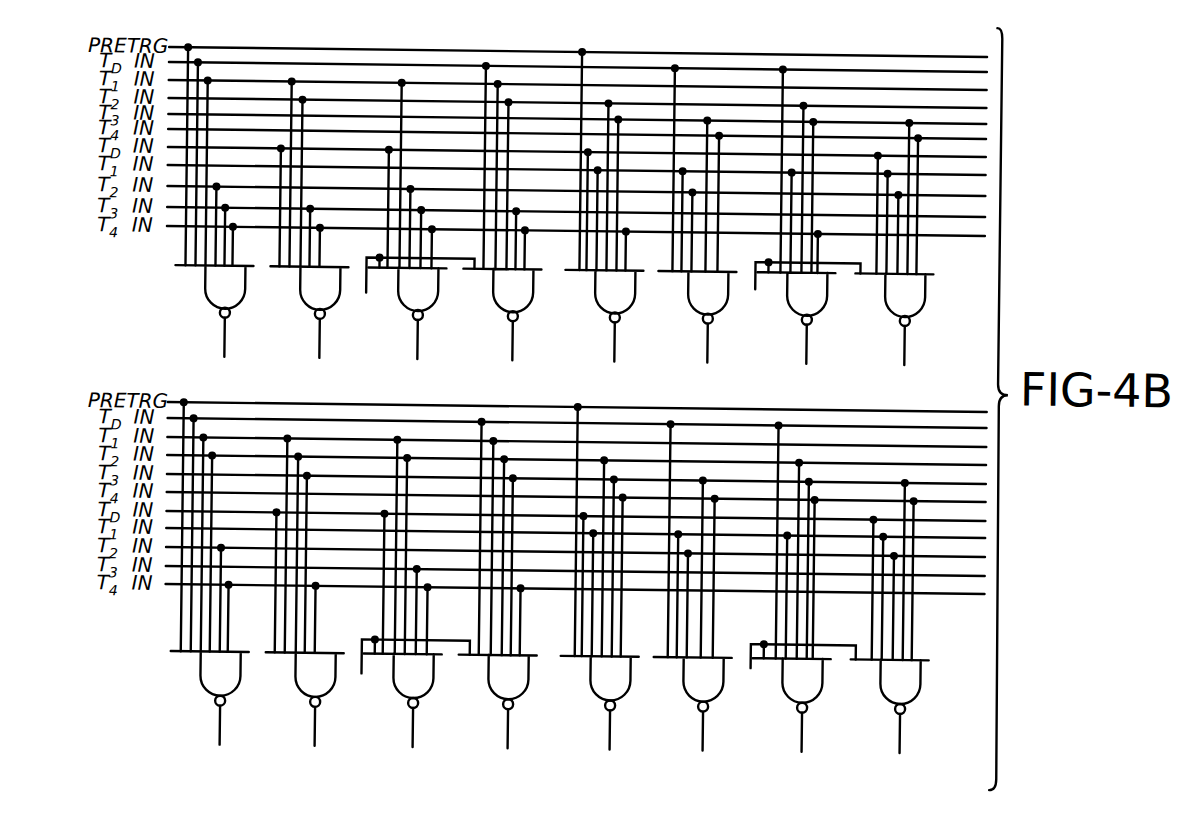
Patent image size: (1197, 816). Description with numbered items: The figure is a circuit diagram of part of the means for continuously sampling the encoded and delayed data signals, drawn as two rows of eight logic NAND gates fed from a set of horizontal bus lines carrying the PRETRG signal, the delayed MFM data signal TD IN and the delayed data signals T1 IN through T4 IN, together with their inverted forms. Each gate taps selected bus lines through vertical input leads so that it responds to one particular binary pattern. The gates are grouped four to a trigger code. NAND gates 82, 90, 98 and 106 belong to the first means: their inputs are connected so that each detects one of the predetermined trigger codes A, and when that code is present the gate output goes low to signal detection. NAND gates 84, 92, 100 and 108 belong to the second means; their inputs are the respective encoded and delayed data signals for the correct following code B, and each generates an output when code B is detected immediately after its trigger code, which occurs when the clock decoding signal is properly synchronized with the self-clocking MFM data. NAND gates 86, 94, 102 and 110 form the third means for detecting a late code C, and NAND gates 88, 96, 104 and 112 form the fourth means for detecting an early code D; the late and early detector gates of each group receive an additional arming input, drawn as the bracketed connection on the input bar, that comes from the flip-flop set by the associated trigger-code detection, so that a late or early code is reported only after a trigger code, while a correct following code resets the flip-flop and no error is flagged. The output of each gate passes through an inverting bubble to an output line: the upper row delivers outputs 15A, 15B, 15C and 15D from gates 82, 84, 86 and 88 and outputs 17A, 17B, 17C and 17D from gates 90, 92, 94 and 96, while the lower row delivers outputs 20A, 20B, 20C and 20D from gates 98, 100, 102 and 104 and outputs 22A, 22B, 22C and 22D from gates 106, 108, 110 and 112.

The NAND gate 82 is at (213, 290).
The NAND gate 84 is at (308, 290).
The NAND gate 86 is at (406, 290).
The NAND gate 88 is at (501, 290).
The NAND gate 90 is at (603, 290).
The NAND gate 92 is at (696, 290).
The NAND gate 94 is at (795, 290).
The NAND gate 96 is at (893, 290).
The NAND gate 98 is at (216, 679).
The NAND gate 100 is at (311, 679).
The NAND gate 102 is at (409, 679).
The NAND gate 104 is at (504, 679).
The NAND gate 106 is at (606, 679).
The NAND gate 108 is at (699, 679).
The NAND gate 110 is at (798, 679).
The NAND gate 112 is at (896, 679).
The gate output line 15A is at (251, 344).
The gate output line 15B is at (346, 345).
The gate output line 15C is at (444, 346).
The gate output line 15D is at (540, 347).
The gate output line 17A is at (641, 348).
The gate output line 17B is at (734, 350).
The gate output line 17C is at (833, 351).
The gate output line 17D is at (932, 352).
The gate output line 20A is at (227, 729).
The gate output line 20B is at (322, 729).
The gate output line 20C is at (420, 729).
The gate output line 20D is at (515, 729).
The gate output line 22A is at (617, 729).
The gate output line 22B is at (710, 729).
The gate output line 22C is at (809, 729).
The gate output line 22D is at (907, 729).